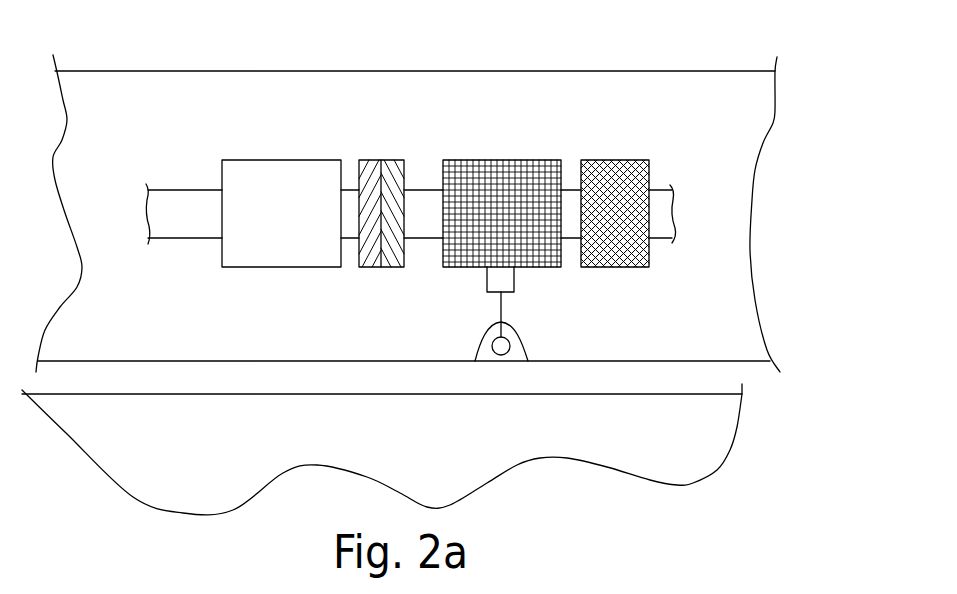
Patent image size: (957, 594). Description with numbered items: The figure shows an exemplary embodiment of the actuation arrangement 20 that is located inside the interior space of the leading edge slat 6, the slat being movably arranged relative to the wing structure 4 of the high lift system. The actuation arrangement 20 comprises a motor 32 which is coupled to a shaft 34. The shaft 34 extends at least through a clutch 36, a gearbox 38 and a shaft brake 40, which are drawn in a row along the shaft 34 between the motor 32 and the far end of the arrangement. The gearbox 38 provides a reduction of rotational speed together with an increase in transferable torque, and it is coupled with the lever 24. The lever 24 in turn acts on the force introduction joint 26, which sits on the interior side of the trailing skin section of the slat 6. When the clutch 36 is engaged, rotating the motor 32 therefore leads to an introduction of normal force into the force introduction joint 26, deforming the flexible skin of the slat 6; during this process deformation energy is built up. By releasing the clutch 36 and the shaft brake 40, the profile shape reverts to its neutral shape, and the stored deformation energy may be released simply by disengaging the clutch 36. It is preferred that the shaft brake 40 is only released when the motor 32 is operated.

The wing structure 4 is at (713, 423).
The leading edge slat 6 is at (757, 112).
The actuation arrangement 20 is at (553, 90).
The lever 24 is at (505, 305).
The force introduction joint 26 is at (493, 343).
The motor 32 is at (288, 263).
The shaft 34 is at (193, 233).
The clutch 36 is at (377, 268).
The gearbox 38 is at (475, 268).
The shaft brake 40 is at (613, 268).